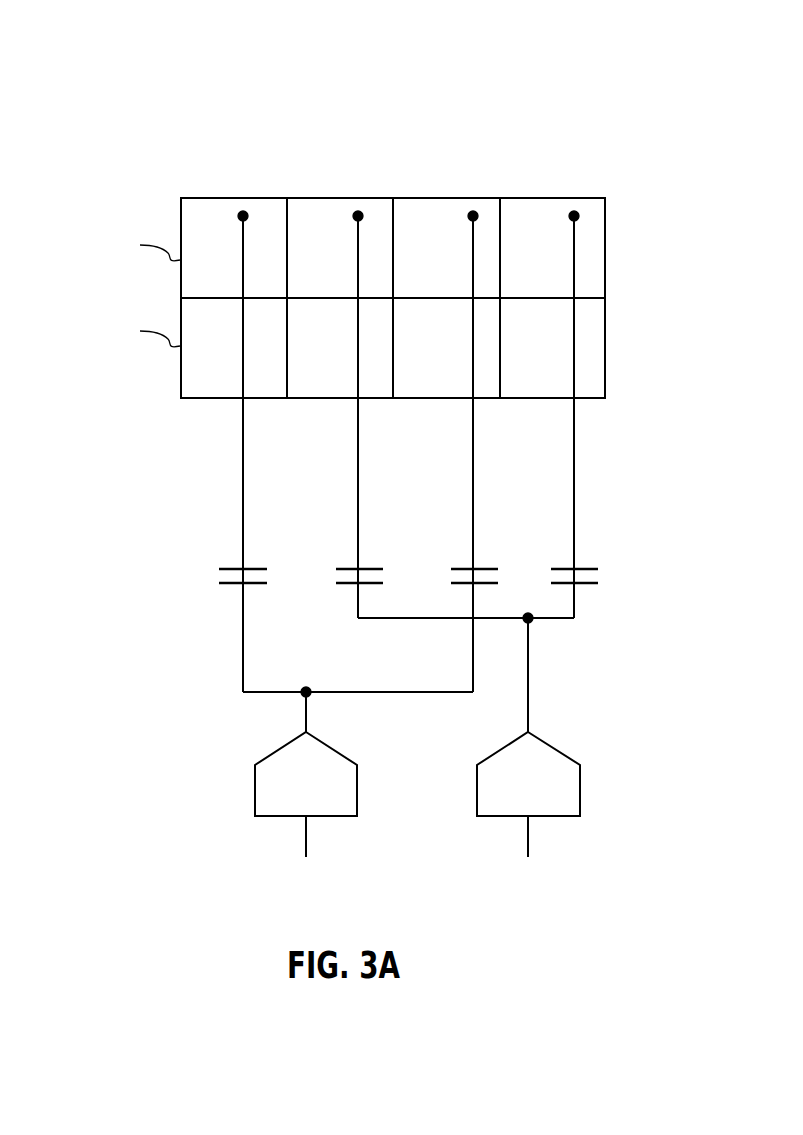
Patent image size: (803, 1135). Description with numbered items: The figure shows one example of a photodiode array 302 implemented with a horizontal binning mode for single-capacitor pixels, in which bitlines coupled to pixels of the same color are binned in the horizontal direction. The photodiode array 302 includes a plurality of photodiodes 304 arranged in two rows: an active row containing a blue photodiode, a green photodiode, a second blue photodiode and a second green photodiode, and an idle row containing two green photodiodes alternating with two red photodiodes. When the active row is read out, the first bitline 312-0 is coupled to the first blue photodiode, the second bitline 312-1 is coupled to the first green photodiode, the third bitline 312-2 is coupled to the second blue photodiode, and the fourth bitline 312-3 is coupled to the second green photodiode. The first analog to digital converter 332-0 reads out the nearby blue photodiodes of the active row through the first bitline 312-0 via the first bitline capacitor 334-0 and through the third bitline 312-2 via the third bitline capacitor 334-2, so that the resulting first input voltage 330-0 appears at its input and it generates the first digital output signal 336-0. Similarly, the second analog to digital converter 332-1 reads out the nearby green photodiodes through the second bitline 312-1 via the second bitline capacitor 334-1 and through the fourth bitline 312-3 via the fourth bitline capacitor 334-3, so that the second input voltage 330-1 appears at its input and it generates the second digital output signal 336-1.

The photodiode array 302 is at (737, 41).
The photodiodes 304 is at (305, 195).
The bitline BL0 312-0 is at (256, 480).
The bitline BL1 312-1 is at (368, 480).
The bitline BL2 312-2 is at (481, 480).
The bitline BL3 312-3 is at (595, 480).
The bitline capacitor C00 334-0 is at (228, 565).
The bitline capacitor C10 334-1 is at (346, 565).
The bitline capacitor C01 334-2 is at (466, 565).
The bitline capacitor C11 334-3 is at (567, 565).
The input voltage VIN 0 330-0 is at (378, 720).
The input voltage VIN 1 330-1 is at (601, 720).
The analog to digital converter ADC 0 332-0 is at (363, 779).
The analog to digital converter ADC 1 332-1 is at (585, 779).
The digital output signal DOUT 0 336-0 is at (392, 840).
The digital output signal DOUT 1 336-1 is at (612, 840).